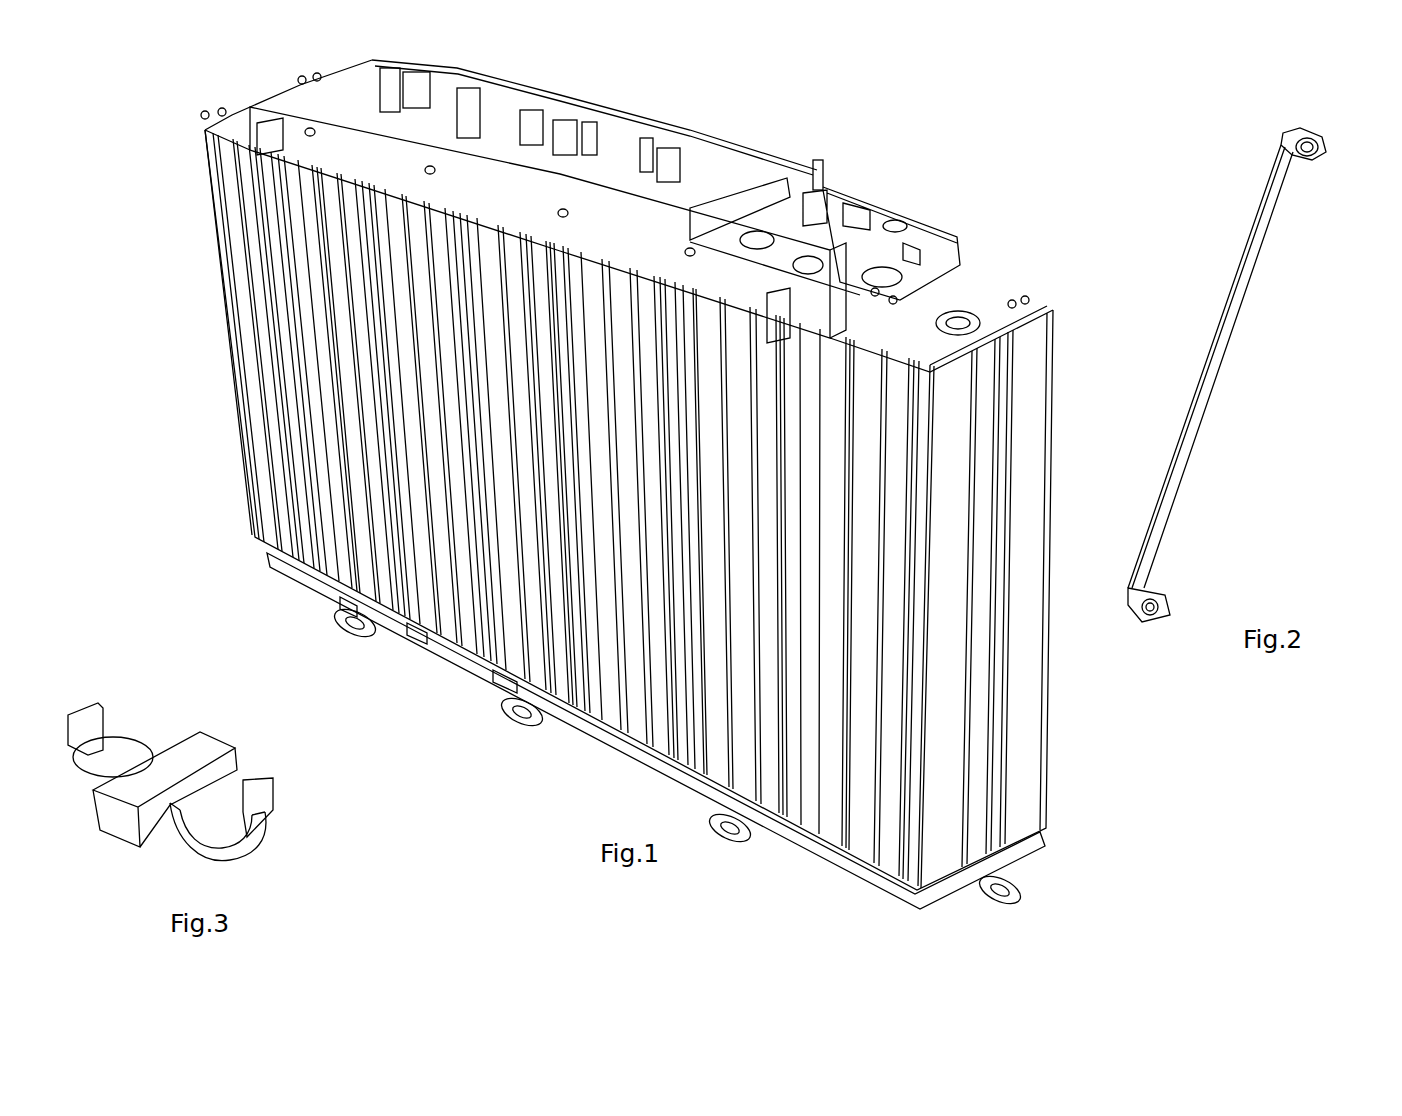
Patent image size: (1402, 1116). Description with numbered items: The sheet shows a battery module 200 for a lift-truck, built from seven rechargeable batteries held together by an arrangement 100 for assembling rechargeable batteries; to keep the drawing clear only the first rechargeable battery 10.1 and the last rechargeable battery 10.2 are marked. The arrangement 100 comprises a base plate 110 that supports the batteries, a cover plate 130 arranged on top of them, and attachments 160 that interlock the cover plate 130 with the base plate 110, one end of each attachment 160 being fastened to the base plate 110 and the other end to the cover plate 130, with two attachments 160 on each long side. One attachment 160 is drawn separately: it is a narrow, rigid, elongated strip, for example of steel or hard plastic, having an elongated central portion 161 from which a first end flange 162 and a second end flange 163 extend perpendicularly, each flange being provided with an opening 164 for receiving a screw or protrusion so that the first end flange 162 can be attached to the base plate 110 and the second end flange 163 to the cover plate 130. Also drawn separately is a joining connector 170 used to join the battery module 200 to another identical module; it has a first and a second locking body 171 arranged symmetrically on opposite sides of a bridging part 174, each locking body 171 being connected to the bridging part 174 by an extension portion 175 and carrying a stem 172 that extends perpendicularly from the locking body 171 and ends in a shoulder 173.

In FIG. 1, the battery module 200 is at (604, 484).
In FIG. 1, the arrangement for assembling rechargeable batteries 100 is at (639, 484).
In FIG. 1, the first rechargeable battery 10.1 is at (1035, 392).
In FIG. 1, the last rechargeable battery 10.2 is at (750, 731).
In FIG. 1, the base plate 110 is at (485, 667).
In FIG. 1, the cover plate 130 is at (927, 224).
In FIG. 1, the attachment 160 is at (268, 150).
In FIG. 2, the attachment 160 is at (1221, 386).
In FIG. 2, the elongated central portion 161 is at (1215, 384).
In FIG. 2, the first end flange 162 is at (1160, 622).
In FIG. 2, the second end flange 163 is at (1255, 343).
In FIG. 2, the opening 164 is at (1318, 164).
In FIG. 1, the joining connector 170 is at (330, 617).
In FIG. 3, the joining connector 170 is at (233, 741).
In FIG. 3, the locking body 171 is at (232, 800).
In FIG. 3, the stem 172 is at (255, 835).
In FIG. 3, the shoulder 173 is at (285, 796).
In FIG. 3, the bridging part 174 is at (170, 750).
In FIG. 3, the extension portion 175 is at (170, 815).